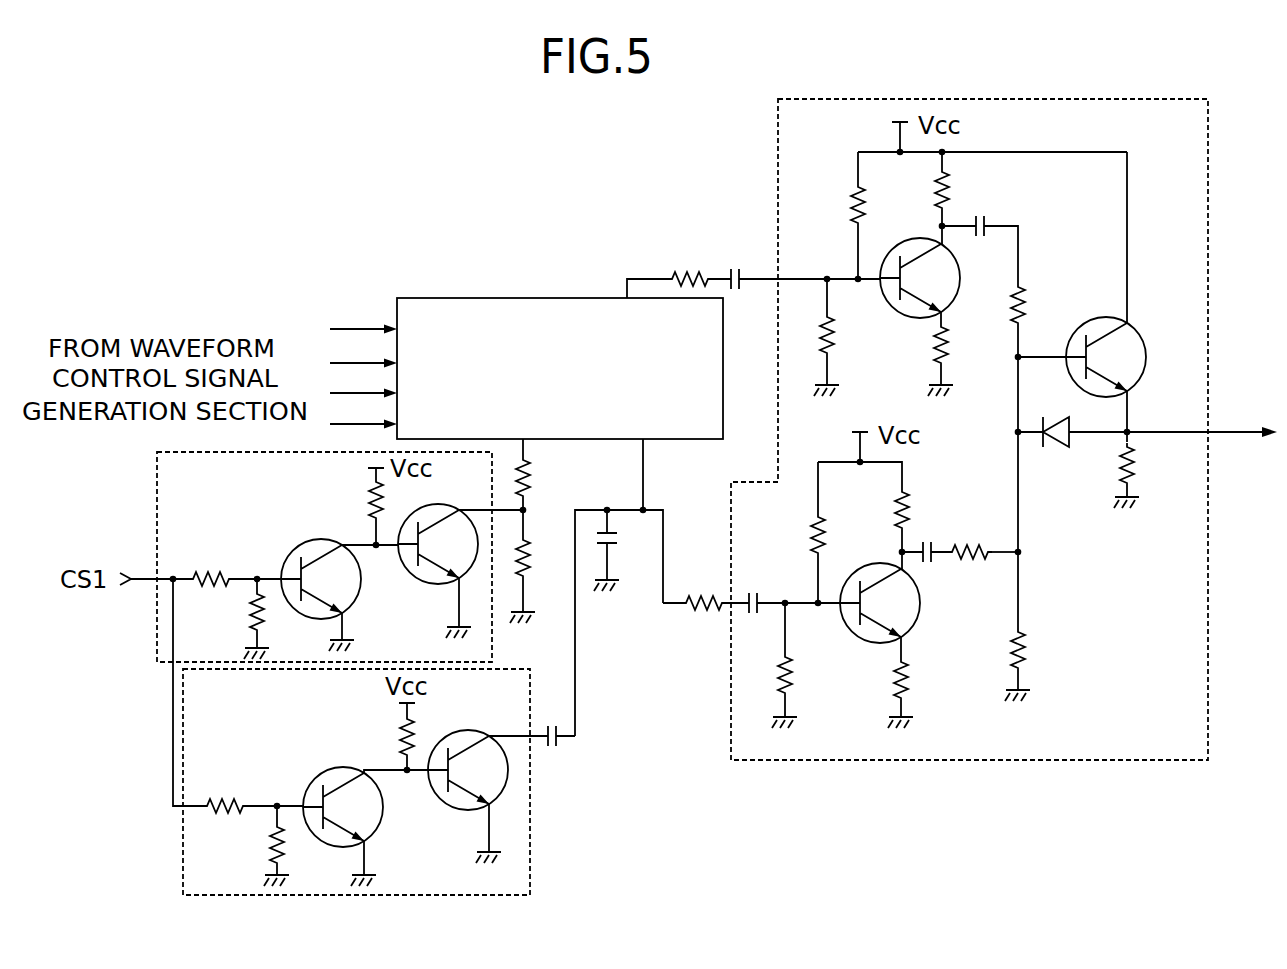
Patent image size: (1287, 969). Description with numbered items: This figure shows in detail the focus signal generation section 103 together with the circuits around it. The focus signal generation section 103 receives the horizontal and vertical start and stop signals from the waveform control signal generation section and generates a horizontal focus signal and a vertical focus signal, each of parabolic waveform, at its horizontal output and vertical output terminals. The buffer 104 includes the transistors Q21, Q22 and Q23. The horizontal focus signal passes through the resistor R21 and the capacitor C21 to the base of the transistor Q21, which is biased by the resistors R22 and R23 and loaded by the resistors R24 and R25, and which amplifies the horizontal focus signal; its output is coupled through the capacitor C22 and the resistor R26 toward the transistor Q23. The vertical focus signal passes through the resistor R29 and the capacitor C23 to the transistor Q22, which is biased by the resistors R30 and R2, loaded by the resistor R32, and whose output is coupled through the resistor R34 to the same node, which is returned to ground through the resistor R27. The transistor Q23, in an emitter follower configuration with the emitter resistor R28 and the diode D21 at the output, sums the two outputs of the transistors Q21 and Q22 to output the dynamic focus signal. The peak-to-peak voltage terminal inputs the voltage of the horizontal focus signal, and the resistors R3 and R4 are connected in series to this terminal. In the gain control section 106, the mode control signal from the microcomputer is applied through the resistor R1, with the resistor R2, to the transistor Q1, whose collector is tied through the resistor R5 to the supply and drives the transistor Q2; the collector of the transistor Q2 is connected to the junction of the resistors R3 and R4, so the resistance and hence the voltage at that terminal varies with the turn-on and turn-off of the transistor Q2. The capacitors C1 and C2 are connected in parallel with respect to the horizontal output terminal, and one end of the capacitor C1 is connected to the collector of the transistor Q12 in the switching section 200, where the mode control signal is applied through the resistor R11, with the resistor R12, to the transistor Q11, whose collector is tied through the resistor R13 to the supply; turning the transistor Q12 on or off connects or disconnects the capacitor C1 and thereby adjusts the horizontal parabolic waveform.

The focus signal generation section 103 is at (523, 298).
The buffer 104 is at (778, 137).
The gain control section 106 is at (155, 627).
The switching section 200 is at (183, 845).
The resistor R1 is at (211, 566).
The resistor R2 is at (243, 619).
The resistor R3 is at (543, 474).
The resistor R4 is at (540, 566).
The resistor R5 is at (359, 506).
The resistor R11 is at (229, 791).
The resistor R12 is at (253, 846).
The resistor R13 is at (381, 736).
The resistor R21 is at (706, 619).
The resistor R22 is at (791, 532).
The resistor R23 is at (808, 665).
The resistor R24 is at (875, 527).
The resistor R25 is at (924, 682).
The resistor R26 is at (983, 567).
The resistor R27 is at (1040, 664).
The resistor R28 is at (1151, 475).
The resistor R29 is at (682, 261).
The resistor R30 is at (832, 215).
The resistor R32 is at (967, 198).
The resistor R34 is at (1043, 455).
The capacitor C1 is at (534, 754).
The capacitor C2 is at (624, 550).
The capacitor C21 is at (790, 589).
The capacitor C22 is at (932, 538).
The capacitor C23 is at (738, 262).
The transistor Q1 is at (321, 595).
The transistor Q2 is at (438, 571).
The transistor Q11 is at (343, 826).
The transistor Q12 is at (468, 796).
The transistor Q21 is at (880, 603).
The transistor Q22 is at (920, 278).
The transistor Q23 is at (1082, 297).
The diode D21 is at (1140, 448).